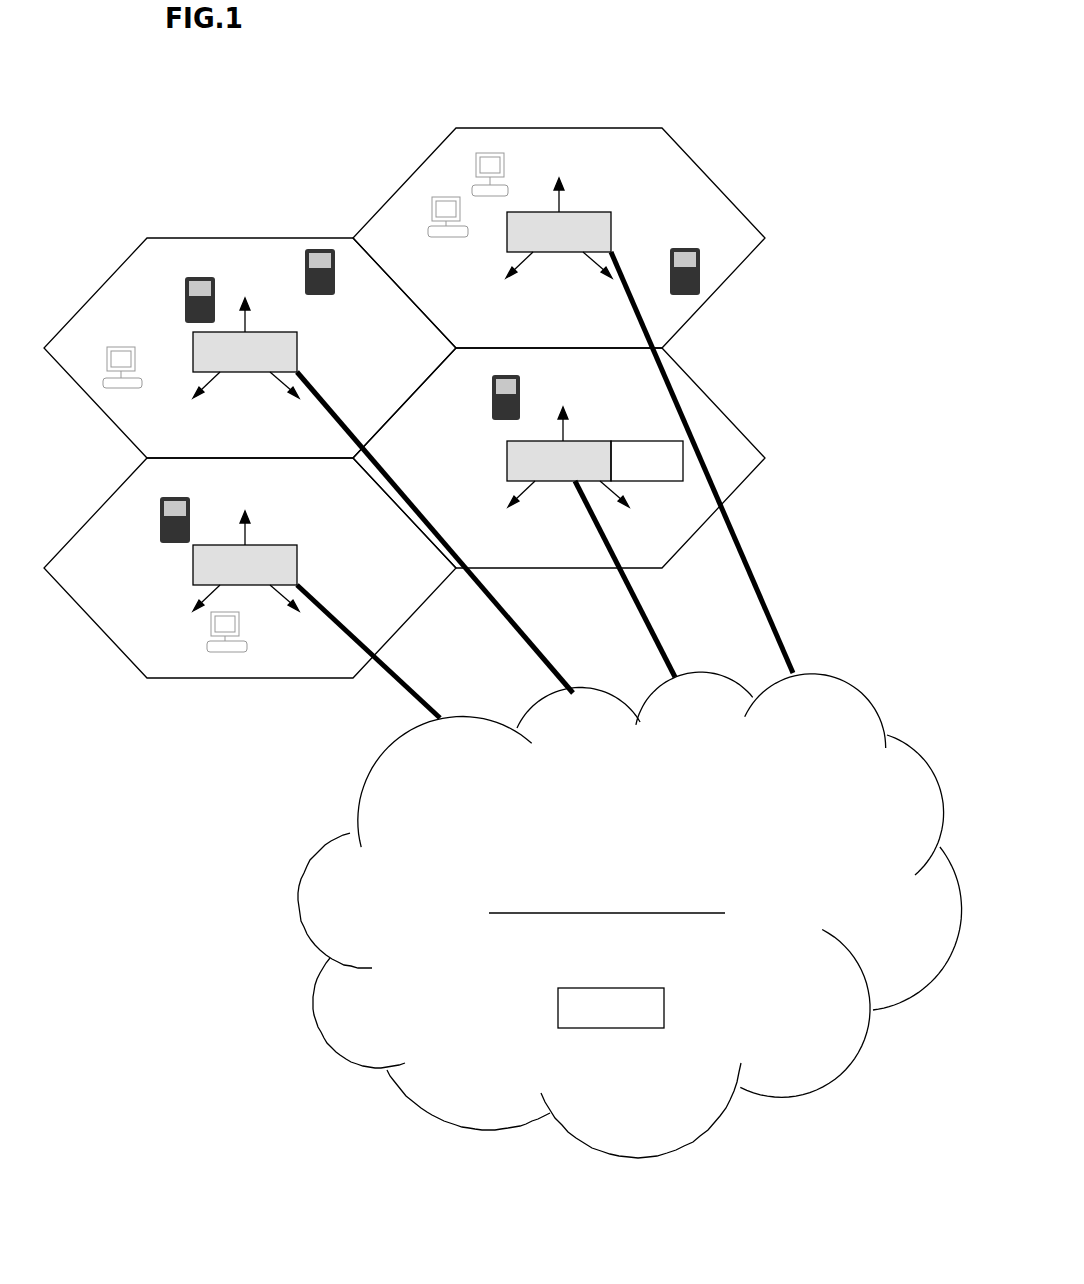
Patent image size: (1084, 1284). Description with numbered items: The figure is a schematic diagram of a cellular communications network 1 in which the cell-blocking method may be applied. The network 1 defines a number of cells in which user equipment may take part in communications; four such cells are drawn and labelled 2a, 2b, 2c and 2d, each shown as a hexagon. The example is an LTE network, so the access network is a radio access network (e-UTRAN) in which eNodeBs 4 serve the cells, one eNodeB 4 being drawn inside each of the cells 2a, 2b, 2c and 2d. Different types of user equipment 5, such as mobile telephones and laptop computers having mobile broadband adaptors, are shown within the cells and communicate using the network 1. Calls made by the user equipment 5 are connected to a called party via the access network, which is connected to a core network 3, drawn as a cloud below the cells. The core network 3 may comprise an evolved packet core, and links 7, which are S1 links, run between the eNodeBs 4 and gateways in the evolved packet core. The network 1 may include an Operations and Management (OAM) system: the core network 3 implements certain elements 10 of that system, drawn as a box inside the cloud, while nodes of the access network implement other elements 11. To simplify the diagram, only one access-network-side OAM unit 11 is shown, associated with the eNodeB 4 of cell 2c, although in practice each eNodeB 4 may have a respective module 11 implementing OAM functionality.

The cellular communications network 1 is at (212, 140).
The cell 2a is at (636, 168).
The cell 2b is at (379, 348).
The cell 2c is at (732, 459).
The cell 2d is at (360, 562).
The core network 3 is at (630, 915).
The eNodeB 4 is at (611, 223).
The user equipment 5 is at (472, 163).
The link 7 is at (778, 620).
The OAM system element 10 is at (557, 1007).
The access-network-side OAM unit 11 is at (660, 440).